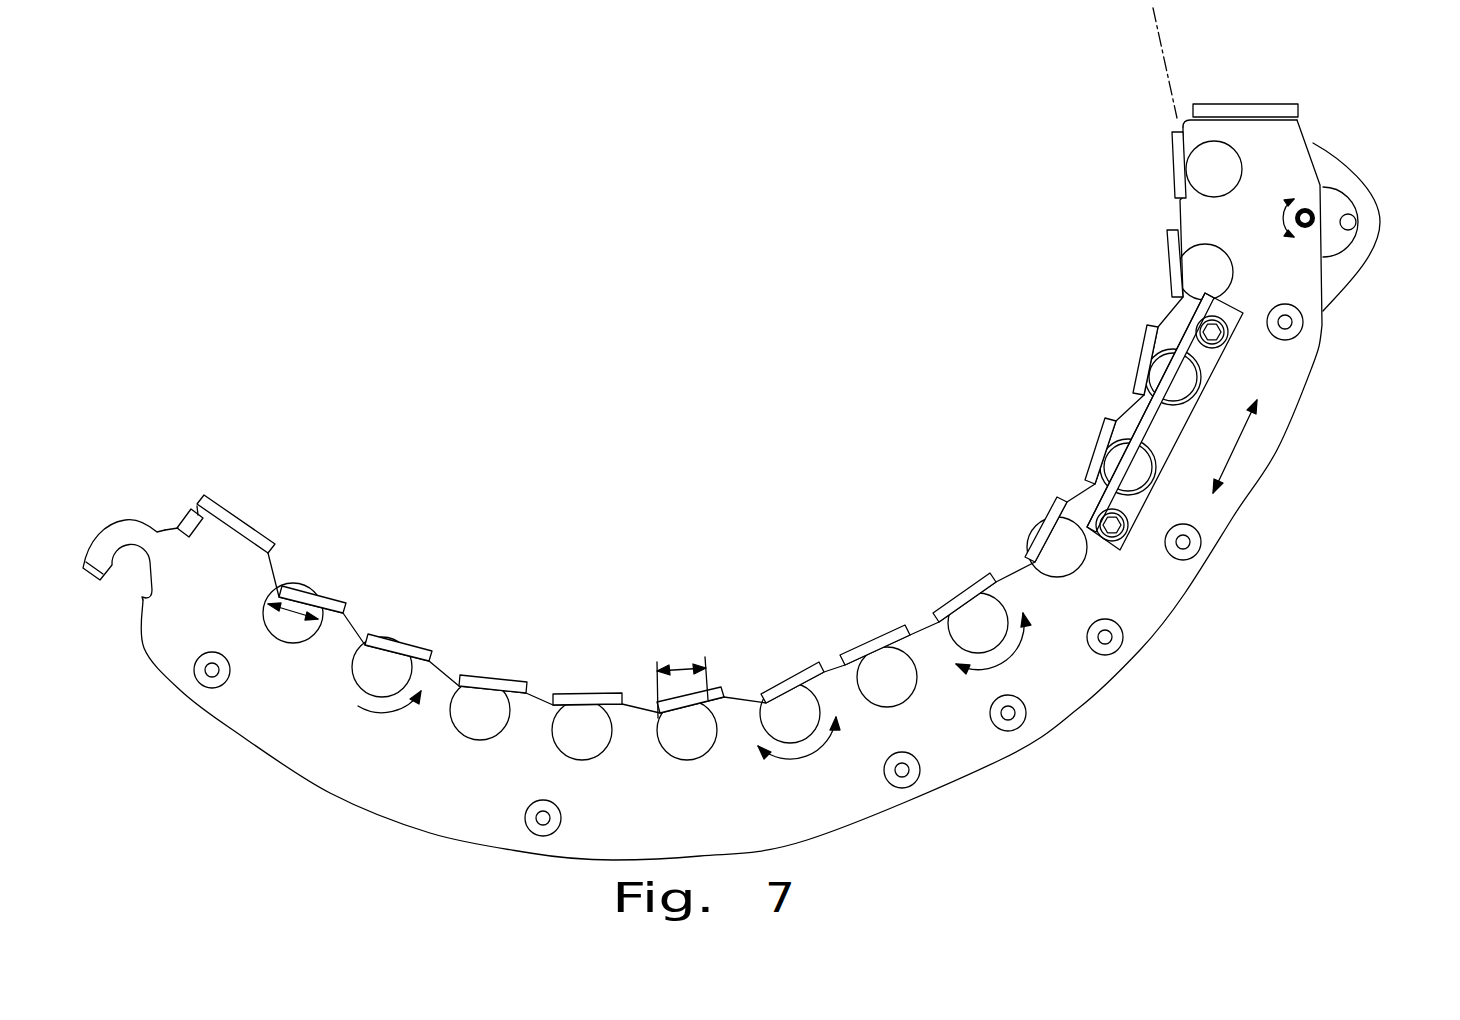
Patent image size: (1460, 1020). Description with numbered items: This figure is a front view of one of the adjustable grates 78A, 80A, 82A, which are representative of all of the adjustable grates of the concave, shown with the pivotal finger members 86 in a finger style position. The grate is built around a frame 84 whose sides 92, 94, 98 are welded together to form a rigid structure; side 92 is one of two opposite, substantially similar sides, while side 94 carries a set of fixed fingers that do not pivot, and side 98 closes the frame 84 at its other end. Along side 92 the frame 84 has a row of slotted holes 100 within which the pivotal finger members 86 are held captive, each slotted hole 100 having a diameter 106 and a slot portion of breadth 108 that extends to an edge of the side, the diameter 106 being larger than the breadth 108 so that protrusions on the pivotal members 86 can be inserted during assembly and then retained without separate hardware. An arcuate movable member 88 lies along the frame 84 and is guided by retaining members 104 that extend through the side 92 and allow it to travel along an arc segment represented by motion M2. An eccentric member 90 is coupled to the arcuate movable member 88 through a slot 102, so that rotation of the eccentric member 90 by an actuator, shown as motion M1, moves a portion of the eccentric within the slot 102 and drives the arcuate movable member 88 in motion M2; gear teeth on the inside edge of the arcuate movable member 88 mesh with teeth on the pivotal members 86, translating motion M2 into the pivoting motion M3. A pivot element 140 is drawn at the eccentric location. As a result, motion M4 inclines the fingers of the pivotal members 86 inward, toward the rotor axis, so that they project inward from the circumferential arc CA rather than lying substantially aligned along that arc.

The adjustable grate 78A is at (770, 436).
The adjustable grate 80A is at (770, 436).
The adjustable grate 82A is at (770, 436).
The frame 84 is at (770, 436).
The pivotal finger members 86 is at (727, 425).
The arcuate movable members 88 is at (1378, 234).
The eccentric member 90 is at (1353, 216).
The side 92 is at (1080, 707).
The side 94 is at (202, 497).
The side 98 is at (1253, 104).
The slotted holes 100 is at (283, 645).
The slot 102 is at (1350, 250).
The retaining members 104 is at (530, 807).
The diameter 106 is at (298, 605).
The breadth 108 is at (684, 662).
The pivot pin 140 is at (1308, 210).
The motion M1 is at (1282, 219).
The motion M2 is at (1237, 447).
The motion M3 is at (805, 757).
The motion M4 is at (389, 715).
The circumferential arc CA is at (1160, 50).